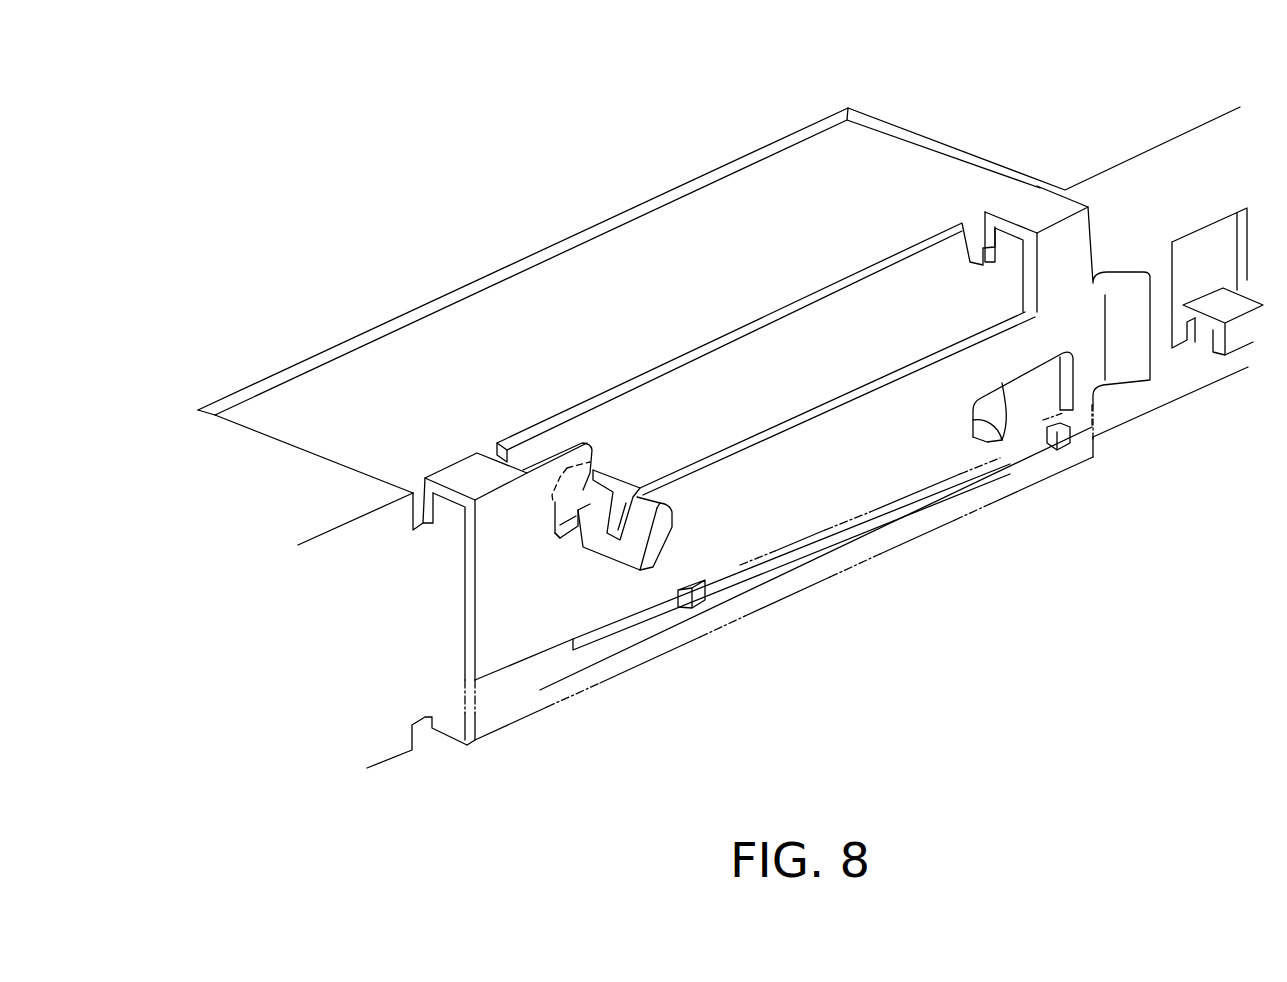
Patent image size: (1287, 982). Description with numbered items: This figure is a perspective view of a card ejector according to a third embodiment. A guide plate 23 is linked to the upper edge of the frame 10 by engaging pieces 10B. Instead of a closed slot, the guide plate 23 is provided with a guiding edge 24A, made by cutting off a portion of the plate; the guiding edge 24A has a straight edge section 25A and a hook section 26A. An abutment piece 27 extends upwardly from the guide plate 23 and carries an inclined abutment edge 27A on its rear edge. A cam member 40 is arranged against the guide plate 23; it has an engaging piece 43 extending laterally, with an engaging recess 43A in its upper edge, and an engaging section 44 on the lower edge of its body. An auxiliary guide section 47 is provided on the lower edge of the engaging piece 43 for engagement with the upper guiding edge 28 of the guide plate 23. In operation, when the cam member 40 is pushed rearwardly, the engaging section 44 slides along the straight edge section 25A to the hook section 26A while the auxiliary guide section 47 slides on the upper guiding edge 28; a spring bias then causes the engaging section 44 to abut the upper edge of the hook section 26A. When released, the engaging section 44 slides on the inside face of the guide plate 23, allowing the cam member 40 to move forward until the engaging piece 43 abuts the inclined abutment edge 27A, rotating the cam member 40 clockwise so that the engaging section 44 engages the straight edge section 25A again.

The frame 10 is at (646, 172).
The engaging pieces 10B is at (465, 468).
The upper guiding edge 28 is at (830, 397).
The abutment piece 27 is at (533, 470).
The inclined abutment edge 27A is at (612, 460).
The cam member 40 is at (633, 460).
The engaging recess 43A is at (665, 512).
The engaging piece 43 is at (592, 508).
The guide plate 23 is at (770, 520).
The straight edge section 25A is at (893, 490).
The hook section 26A is at (1002, 383).
The guiding edge 24A is at (1046, 573).
The engaging section 44 is at (697, 607).
The auxiliary guide section 47 is at (557, 542).